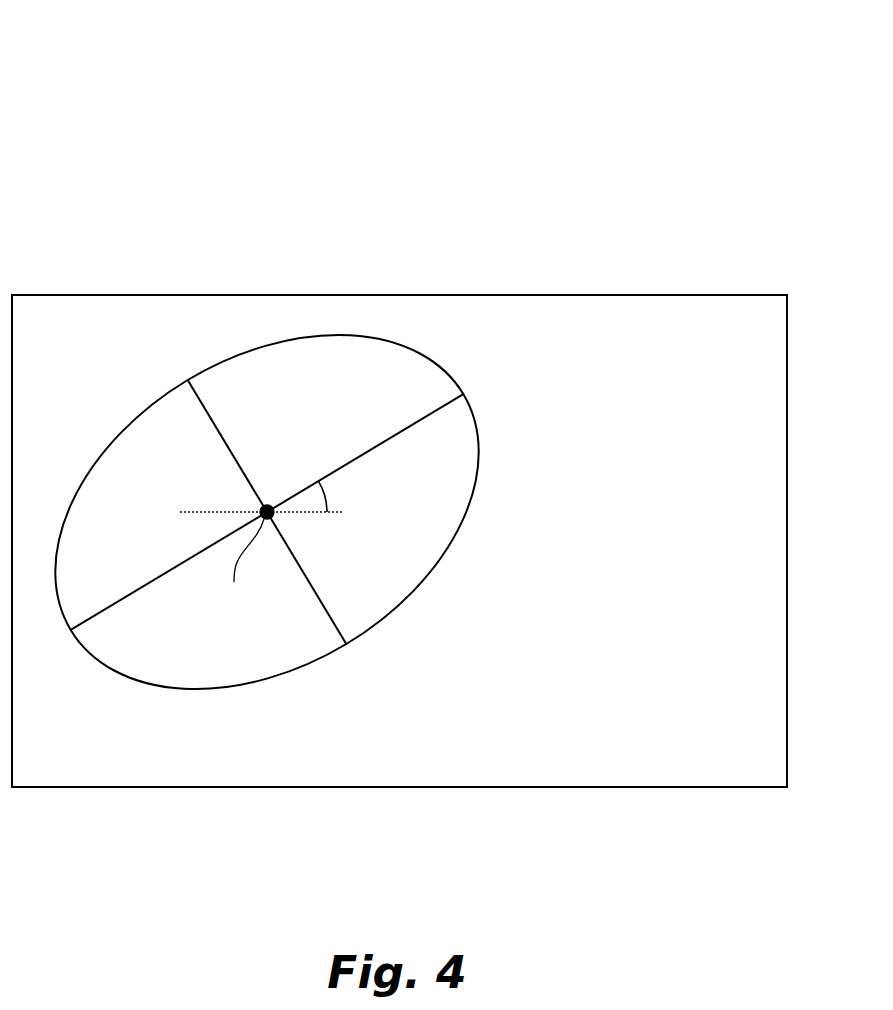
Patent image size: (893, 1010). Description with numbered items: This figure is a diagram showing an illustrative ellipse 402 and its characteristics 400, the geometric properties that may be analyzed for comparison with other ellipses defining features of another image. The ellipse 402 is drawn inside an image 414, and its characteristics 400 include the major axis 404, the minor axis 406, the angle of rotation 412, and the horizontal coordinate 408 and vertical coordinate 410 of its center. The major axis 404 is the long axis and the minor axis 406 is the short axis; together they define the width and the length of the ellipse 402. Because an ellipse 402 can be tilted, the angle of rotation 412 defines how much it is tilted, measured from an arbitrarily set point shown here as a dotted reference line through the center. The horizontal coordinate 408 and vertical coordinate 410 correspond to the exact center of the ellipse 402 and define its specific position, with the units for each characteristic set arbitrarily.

The characteristics 400 is at (202, 135).
The ellipse 402 is at (346, 337).
The major axis 404 is at (465, 396).
The minor axis 406 is at (205, 408).
The horizontal coordinate 408 is at (230, 610).
The vertical coordinate 410 is at (247, 610).
The angle of rotation 412 is at (330, 500).
The image 414 is at (622, 295).